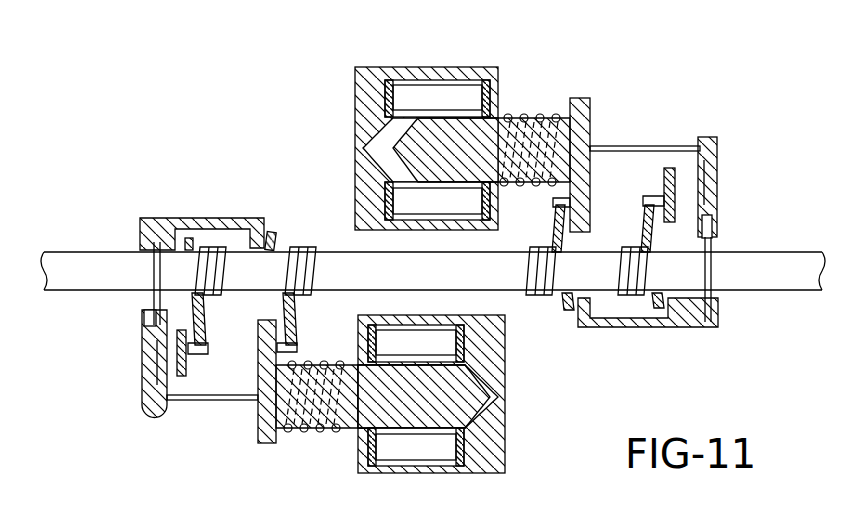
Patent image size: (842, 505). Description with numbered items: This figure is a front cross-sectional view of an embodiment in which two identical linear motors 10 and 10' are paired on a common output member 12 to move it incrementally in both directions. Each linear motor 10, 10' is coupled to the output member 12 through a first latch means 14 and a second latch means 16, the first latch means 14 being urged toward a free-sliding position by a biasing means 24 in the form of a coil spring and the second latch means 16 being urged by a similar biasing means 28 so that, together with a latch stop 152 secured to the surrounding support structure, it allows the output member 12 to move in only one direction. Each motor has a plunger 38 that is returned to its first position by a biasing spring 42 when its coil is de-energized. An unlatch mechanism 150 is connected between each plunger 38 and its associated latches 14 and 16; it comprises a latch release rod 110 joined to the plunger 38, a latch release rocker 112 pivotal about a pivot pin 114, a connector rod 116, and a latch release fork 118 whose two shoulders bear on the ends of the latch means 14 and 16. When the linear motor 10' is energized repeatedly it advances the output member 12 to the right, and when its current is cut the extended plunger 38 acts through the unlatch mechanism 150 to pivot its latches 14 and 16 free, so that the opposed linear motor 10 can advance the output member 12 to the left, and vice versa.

The linear motor 10 is at (426, 117).
The linear motor 10' is at (457, 394).
The output member 12 is at (777, 263).
The first latch means 14 is at (545, 221).
The second latch means 16 is at (637, 207).
The biasing means 24 is at (537, 277).
The biasing means 28 is at (633, 283).
The plunger 38 is at (428, 127).
The biasing spring 42 is at (310, 430).
The latch release rod 110 is at (653, 146).
The latch release rocker 112 is at (717, 200).
The pivot pin 114 is at (713, 218).
The connector rod 116 is at (715, 275).
The latch release fork 118 is at (167, 226).
The unlatch mechanism 150 is at (800, 127).
The latch stop 152 is at (675, 188).